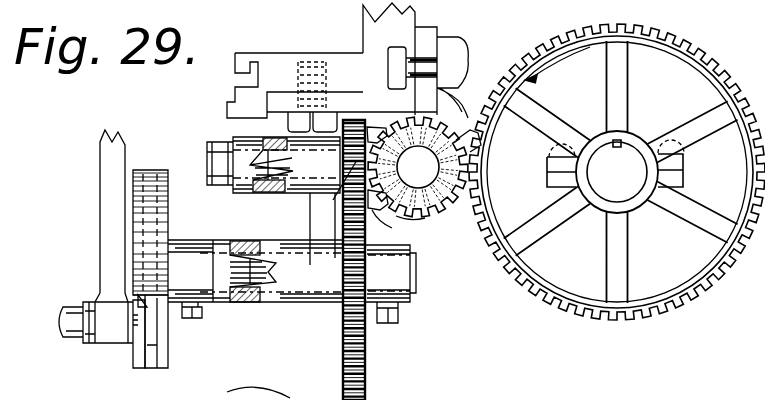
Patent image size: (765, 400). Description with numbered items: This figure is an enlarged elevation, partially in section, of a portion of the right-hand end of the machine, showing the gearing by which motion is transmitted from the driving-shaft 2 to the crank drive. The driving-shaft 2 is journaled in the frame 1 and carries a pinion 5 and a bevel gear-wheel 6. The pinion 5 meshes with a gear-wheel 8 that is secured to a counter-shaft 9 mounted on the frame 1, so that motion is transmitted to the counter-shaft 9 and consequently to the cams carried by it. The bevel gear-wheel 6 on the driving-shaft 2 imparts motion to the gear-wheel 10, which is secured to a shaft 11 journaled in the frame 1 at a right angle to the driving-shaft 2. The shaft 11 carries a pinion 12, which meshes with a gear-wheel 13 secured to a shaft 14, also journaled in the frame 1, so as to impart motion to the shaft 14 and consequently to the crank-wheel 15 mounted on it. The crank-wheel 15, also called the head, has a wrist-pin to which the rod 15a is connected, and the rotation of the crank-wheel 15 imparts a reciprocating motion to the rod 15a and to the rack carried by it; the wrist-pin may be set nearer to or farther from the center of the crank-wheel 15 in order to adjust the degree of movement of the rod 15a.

The frame 1 is at (278, 305).
The driving-shaft 2 is at (418, 167).
The pinion 5 is at (436, 204).
The bevel gear-wheel 6 is at (417, 228).
The gear-wheel 8 is at (617, 186).
The counter-shaft 9 is at (615, 172).
The gear-wheel 10 is at (366, 206).
The shaft 11 is at (273, 190).
The pinion 12 is at (323, 193).
The gear-wheel 13 is at (360, 365).
The shaft 14 is at (232, 305).
The crank-wheel 15 is at (148, 171).
The rod 15a is at (100, 249).